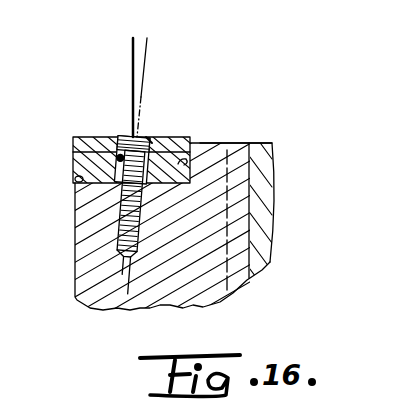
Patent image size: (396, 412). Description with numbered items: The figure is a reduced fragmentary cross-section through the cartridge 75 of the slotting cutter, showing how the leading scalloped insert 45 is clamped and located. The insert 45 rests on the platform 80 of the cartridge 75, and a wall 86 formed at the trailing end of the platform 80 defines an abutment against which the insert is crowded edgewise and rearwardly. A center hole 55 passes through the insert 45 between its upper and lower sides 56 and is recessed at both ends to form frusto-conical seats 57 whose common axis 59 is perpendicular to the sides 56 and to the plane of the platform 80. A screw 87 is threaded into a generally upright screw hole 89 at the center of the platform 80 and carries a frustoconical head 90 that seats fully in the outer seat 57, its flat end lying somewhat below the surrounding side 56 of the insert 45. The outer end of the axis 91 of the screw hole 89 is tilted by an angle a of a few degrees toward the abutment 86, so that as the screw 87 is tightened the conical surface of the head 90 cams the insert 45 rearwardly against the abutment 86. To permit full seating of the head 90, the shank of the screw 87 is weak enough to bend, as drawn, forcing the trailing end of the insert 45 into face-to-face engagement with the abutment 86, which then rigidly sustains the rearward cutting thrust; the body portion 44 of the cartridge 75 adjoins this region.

The scalloped insert 45 is at (163, 137).
The side wall portion 44 is at (193, 142).
The wall 86 is at (240, 143).
The upper and lower sides 56 is at (78, 137).
The center hole 55 is at (73, 152).
The platform 80 is at (75, 178).
The frusto-conical seats 57 is at (113, 137).
The screw hole 89 is at (118, 210).
The screw 87 is at (110, 247).
The frustoconical head 90 is at (148, 138).
The axis 59 is at (132, 57).
The axis of the screw hole 91 is at (143, 67).
The angle a is at (143, 38).
The cartridge 75 is at (150, 294).